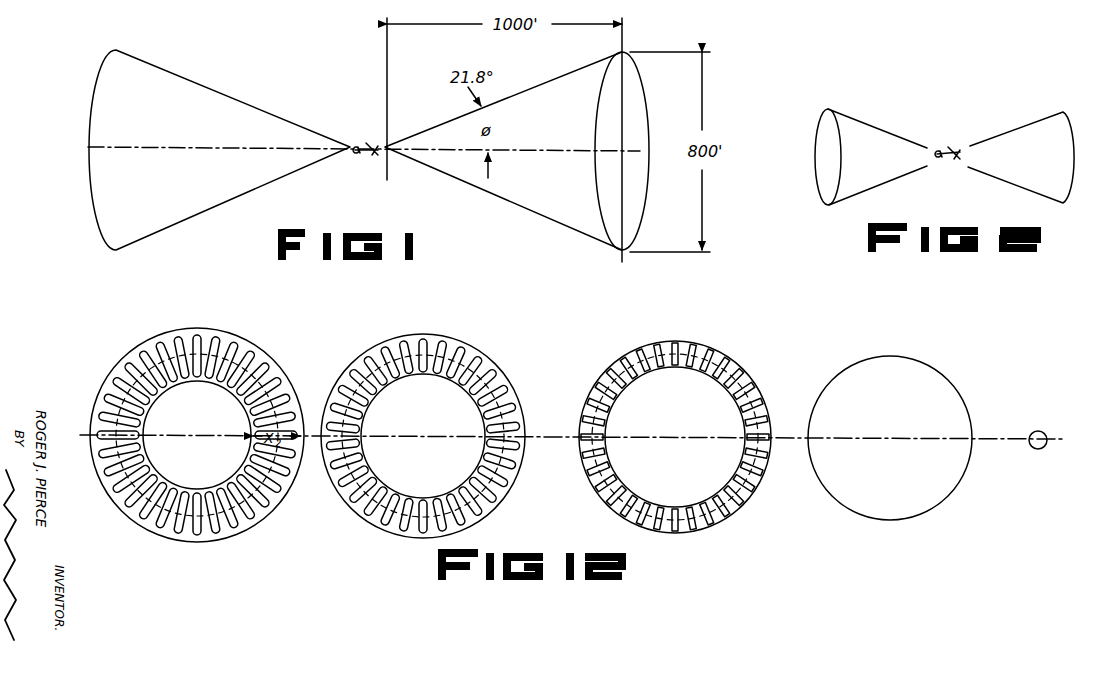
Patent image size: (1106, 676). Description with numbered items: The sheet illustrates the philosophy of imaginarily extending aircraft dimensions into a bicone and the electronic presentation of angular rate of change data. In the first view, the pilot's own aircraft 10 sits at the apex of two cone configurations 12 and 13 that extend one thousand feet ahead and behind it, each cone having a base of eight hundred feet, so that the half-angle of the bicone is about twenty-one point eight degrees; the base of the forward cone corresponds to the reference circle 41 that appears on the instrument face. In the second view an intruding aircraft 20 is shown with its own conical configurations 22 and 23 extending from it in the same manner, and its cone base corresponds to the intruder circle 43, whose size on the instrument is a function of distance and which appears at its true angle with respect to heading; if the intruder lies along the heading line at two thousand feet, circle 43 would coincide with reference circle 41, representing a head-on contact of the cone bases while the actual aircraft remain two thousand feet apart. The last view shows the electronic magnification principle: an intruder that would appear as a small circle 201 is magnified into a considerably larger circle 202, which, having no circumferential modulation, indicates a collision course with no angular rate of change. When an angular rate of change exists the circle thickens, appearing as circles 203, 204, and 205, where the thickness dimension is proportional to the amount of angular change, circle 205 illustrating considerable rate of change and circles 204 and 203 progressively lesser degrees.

In FIG. 1, the aircraft 10 is at (369, 142).
In FIG. 1, the cone configuration 12 is at (543, 80).
In FIG. 1, the cone configuration 13 is at (210, 85).
In FIG. 1, the reference circle 41 is at (645, 92).
In FIG. 2, the aircraft 20 is at (950, 143).
In FIG. 2, the conical configuration 22 is at (857, 118).
In FIG. 2, the conical configuration 23 is at (1002, 130).
In FIG. 2, the intruder circle 43 is at (814, 154).
In FIG. 12, the small circle 201 is at (1032, 431).
In FIG. 12, the magnified circle 202 is at (915, 362).
In FIG. 12, the circle 203 is at (720, 361).
In FIG. 12, the circle 204 is at (478, 362).
In FIG. 12, the circle 205 is at (254, 357).